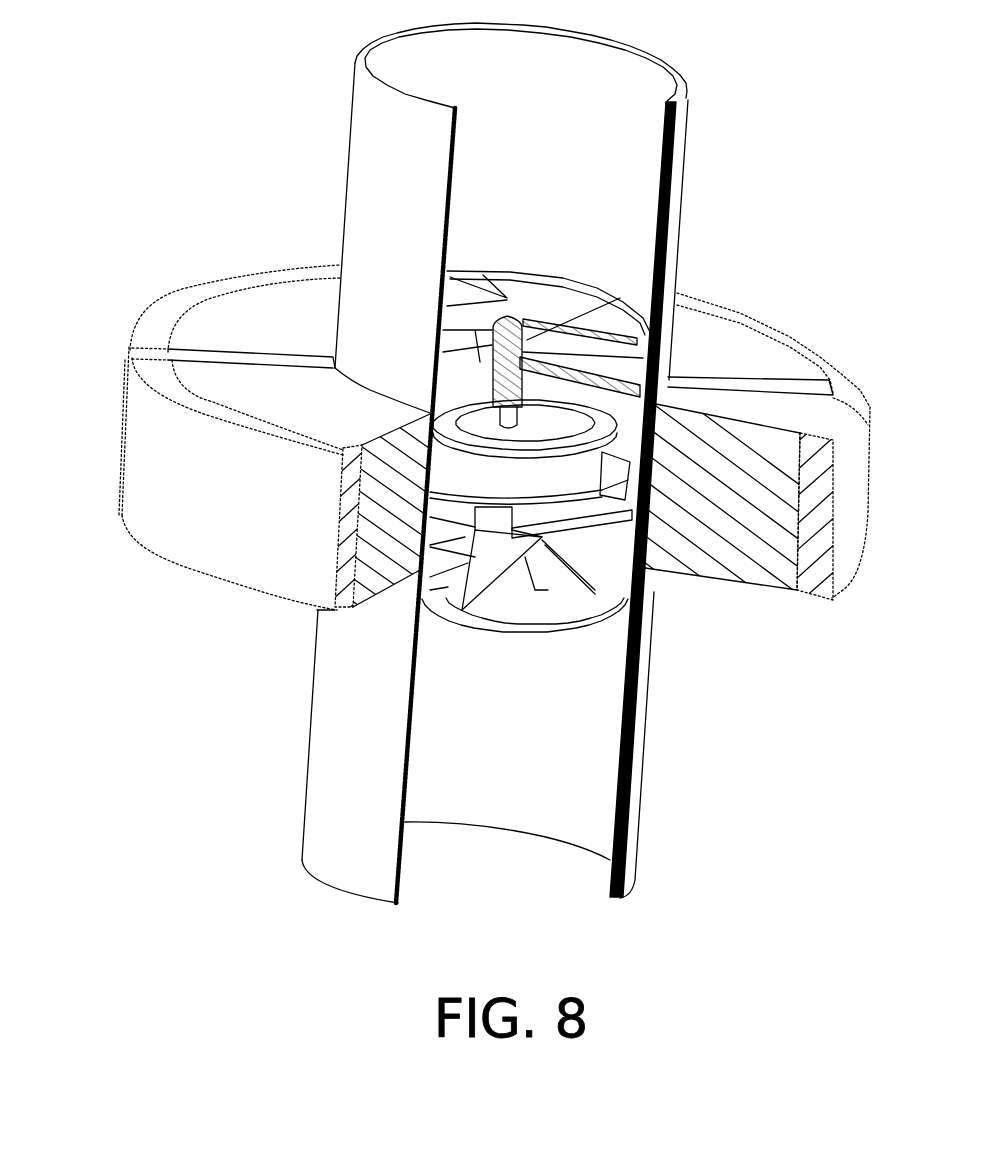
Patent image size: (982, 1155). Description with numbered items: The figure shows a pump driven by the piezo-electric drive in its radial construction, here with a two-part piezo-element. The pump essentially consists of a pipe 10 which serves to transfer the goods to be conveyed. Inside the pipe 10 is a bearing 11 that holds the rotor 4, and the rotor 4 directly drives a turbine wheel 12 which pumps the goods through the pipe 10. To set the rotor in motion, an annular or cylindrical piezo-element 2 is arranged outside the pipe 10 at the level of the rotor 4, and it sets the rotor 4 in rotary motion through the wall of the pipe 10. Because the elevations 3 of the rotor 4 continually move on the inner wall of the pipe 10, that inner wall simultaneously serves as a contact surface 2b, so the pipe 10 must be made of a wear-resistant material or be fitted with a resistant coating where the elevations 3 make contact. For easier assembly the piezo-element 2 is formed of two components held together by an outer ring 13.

The piezo-element 2 is at (270, 317).
The contact surface 2b is at (343, 445).
The elevations 3 is at (607, 478).
The rotor 4 is at (492, 481).
The pipe 10 is at (357, 757).
The bearing 11 is at (507, 317).
The turbine wheel 12 is at (603, 552).
The outer ring 13 is at (177, 473).